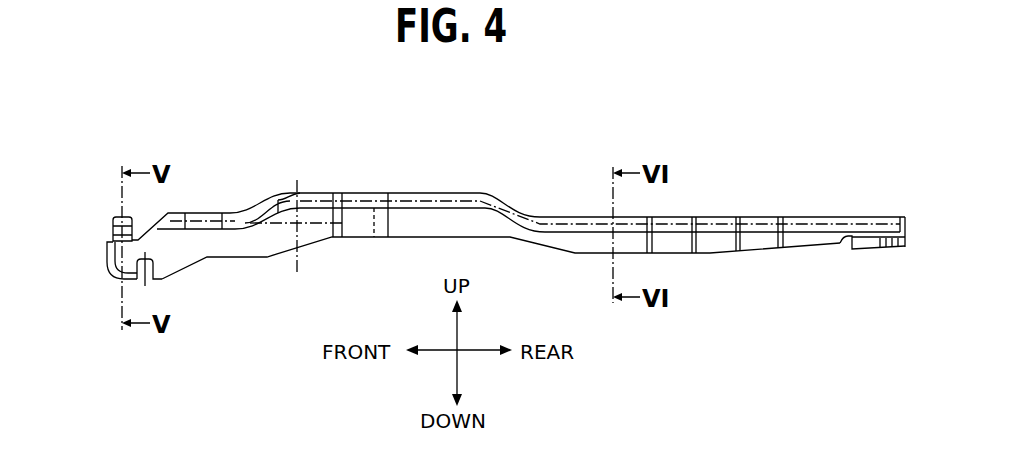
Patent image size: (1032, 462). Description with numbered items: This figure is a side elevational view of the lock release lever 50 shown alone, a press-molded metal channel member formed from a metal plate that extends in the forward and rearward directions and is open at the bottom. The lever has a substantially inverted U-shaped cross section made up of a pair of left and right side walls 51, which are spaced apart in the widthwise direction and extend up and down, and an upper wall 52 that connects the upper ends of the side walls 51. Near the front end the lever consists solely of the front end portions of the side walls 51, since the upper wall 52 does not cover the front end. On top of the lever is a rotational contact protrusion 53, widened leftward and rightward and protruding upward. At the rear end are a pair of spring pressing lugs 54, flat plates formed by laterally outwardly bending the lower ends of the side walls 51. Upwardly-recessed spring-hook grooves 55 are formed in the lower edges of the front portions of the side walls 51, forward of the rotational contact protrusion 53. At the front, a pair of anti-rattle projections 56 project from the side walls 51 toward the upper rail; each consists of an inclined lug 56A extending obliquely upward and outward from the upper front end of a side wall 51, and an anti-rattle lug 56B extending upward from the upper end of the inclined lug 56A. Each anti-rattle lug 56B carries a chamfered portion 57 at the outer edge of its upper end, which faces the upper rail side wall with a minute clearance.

The lock release lever 50 is at (204, 127).
The side walls 51 is at (176, 255).
The upper wall 52 is at (258, 208).
The rotational contact protrusion 53 is at (302, 193).
The spring pressing lugs 54 is at (877, 249).
The spring-hook grooves 55 is at (155, 273).
The anti-rattle projections 56 is at (142, 360).
The inclined lugs 56A is at (115, 240).
The anti-rattle lugs 56B is at (112, 223).
The chamfered portions 57 is at (119, 215).